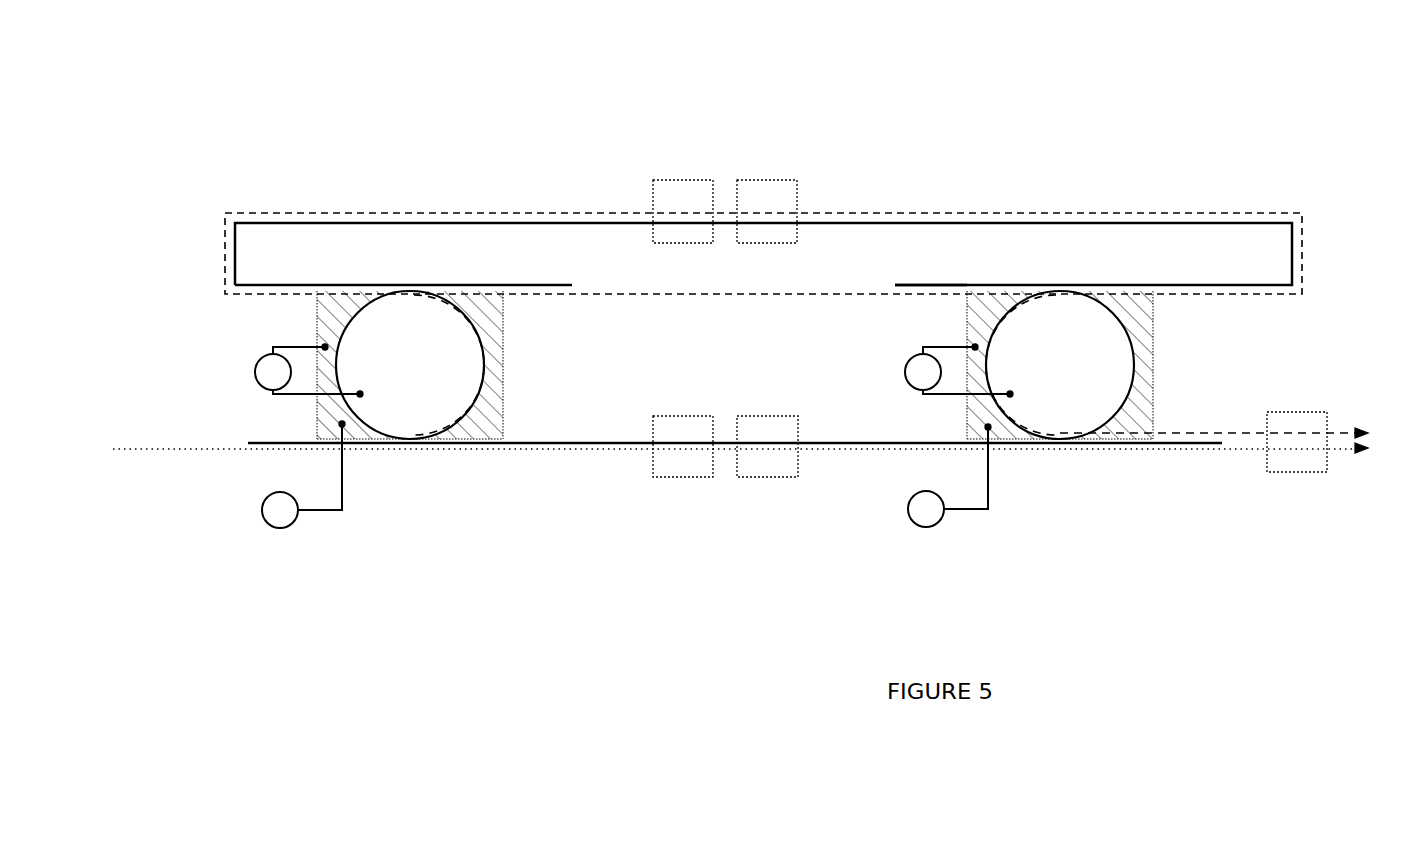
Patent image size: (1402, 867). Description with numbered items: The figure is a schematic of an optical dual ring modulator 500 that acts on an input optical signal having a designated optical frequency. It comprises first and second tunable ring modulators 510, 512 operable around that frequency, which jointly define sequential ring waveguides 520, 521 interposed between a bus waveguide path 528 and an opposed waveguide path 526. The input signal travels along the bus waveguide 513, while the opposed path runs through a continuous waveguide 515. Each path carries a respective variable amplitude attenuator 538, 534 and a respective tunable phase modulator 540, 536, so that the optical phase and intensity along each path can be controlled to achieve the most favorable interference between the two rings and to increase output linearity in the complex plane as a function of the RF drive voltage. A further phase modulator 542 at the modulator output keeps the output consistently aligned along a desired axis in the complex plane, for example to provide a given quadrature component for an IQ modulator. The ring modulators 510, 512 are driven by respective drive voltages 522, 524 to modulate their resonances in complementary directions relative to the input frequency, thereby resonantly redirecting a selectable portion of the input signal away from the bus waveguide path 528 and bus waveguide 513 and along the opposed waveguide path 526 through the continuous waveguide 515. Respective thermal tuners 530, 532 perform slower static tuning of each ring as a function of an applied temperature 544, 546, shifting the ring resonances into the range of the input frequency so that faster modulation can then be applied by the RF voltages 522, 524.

The optical dual ring modulator 500 is at (602, 112).
The first tunable ring modulator 510 is at (598, 343).
The second tunable ring modulator 512 is at (893, 326).
The bus waveguide 513 is at (597, 443).
The continuous waveguide 515 is at (953, 213).
The first ring waveguide 520 is at (493, 325).
The second ring waveguide 521 is at (1135, 325).
The first drive voltage 522 is at (253, 365).
The second drive voltage 524 is at (905, 365).
The opposed waveguide path 526 is at (403, 213).
The bus waveguide path 528 is at (622, 452).
The first thermal tuner 530 is at (497, 415).
The second thermal tuner 532 is at (1150, 410).
The variable amplitude attenuator 534 is at (693, 180).
The tunable phase modulator 536 is at (780, 180).
The variable amplitude attenuator 538 is at (680, 477).
The tunable phase modulator 540 is at (765, 477).
The further phase modulator 542 is at (1292, 472).
The applied temperature 544 is at (258, 510).
The applied temperature 546 is at (908, 510).